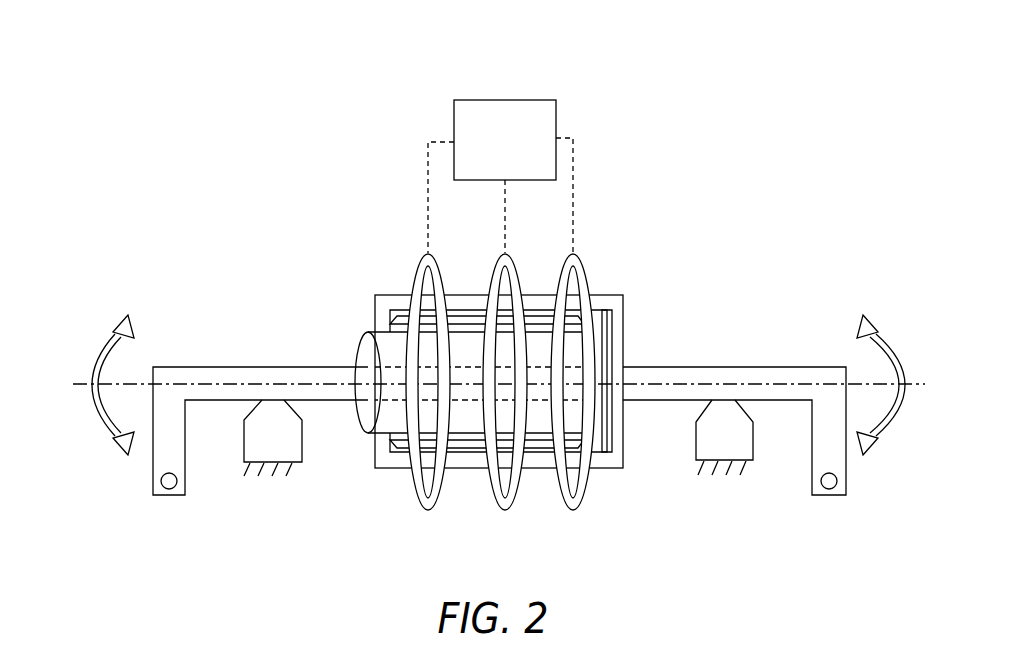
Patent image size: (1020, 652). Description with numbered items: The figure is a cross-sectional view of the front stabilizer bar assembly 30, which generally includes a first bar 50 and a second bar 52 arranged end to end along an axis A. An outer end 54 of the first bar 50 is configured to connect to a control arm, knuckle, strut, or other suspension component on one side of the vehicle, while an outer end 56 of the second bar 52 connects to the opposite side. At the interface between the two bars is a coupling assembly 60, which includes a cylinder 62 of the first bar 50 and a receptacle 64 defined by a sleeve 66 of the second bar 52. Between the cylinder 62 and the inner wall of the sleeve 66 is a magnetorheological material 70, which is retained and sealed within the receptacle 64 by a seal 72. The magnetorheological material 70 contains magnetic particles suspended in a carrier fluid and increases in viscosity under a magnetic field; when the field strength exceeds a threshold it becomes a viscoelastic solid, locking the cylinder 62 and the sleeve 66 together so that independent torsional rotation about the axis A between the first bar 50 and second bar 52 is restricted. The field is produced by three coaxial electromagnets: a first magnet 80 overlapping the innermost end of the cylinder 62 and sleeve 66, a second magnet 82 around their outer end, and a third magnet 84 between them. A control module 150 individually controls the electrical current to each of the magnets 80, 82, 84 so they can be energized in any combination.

The front stabilizer bar assembly 30 is at (305, 160).
The axis A is at (135, 384).
The first bar 50 is at (237, 367).
The second bar 52 is at (728, 367).
The outer end of the first bar 54 is at (169, 495).
The outer end of the second bar 56 is at (829, 495).
The coupling assembly 60 is at (515, 350).
The cylinder 62 is at (367, 435).
The receptacle 64 is at (624, 437).
The sleeve 66 is at (537, 473).
The magnetorheological material 70 is at (477, 440).
The seal 72 is at (362, 308).
The first magnet 80 is at (588, 259).
The second magnet 82 is at (414, 267).
The third magnet 84 is at (489, 264).
The control module 150 is at (494, 100).